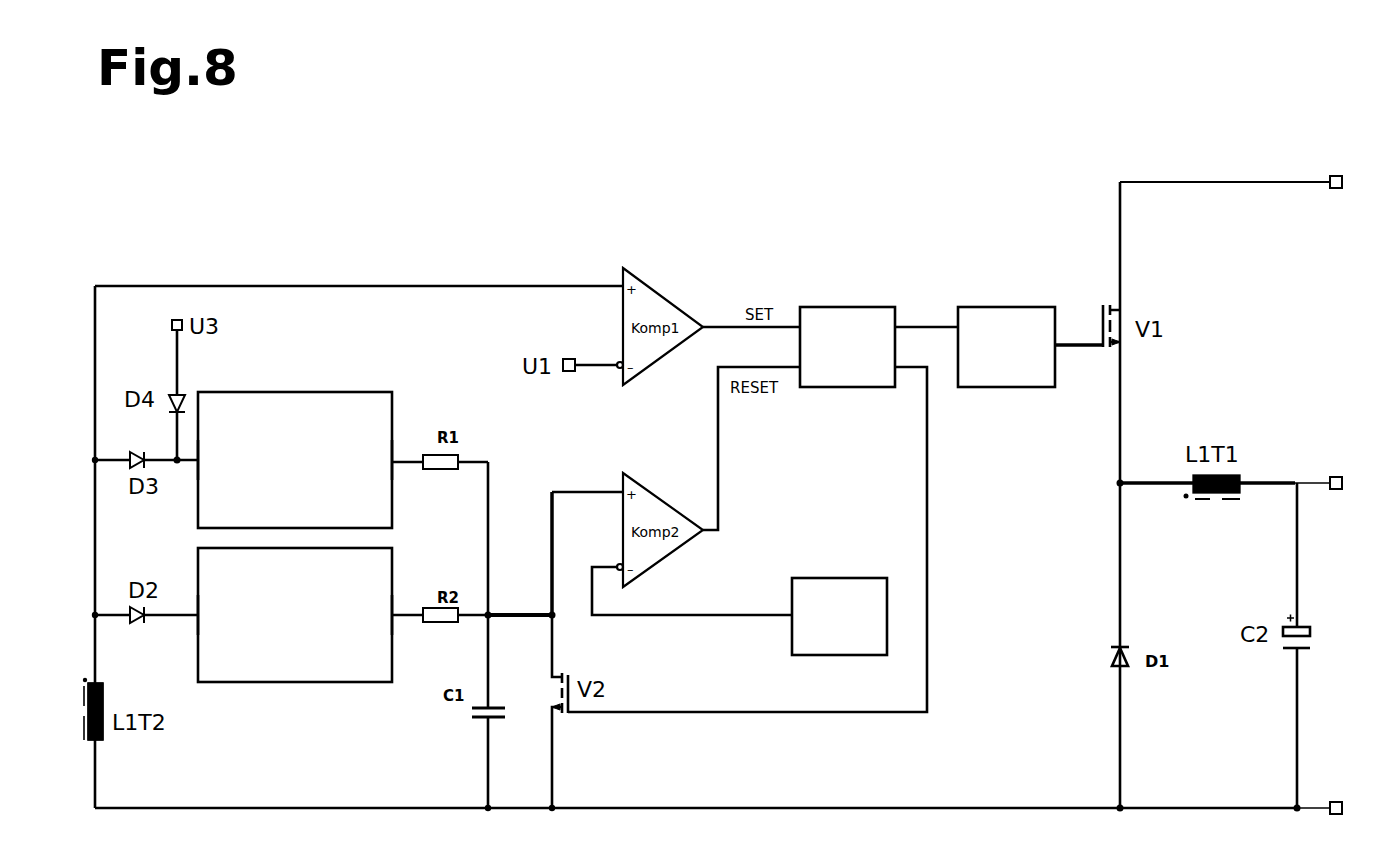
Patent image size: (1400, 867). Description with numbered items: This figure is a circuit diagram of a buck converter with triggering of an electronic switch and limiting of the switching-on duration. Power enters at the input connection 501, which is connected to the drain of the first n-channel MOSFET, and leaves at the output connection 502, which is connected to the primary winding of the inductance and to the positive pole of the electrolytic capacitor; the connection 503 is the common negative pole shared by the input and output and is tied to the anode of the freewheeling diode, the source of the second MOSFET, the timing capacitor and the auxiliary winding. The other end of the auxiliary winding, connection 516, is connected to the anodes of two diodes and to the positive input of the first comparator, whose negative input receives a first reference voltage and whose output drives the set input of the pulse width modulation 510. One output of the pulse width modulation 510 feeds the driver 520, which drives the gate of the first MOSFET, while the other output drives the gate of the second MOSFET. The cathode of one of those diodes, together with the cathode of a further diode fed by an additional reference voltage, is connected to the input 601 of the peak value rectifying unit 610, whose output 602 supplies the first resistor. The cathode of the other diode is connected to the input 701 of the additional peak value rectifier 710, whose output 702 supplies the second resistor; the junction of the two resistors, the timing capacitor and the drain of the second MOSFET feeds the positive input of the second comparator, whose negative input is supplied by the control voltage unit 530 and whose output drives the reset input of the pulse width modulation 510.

The input connection 501 is at (1363, 194).
The output connection 502 is at (1363, 476).
The common negative pole connection 503 is at (1363, 801).
The pulse width modulation 510 is at (847, 347).
The driver 520 is at (1006, 347).
The control voltage unit 530 is at (839, 616).
The input of peak value rectifier 601 is at (222, 460).
The output of peak value rectifier 602 is at (367, 460).
The peak value rectifying unit 610 is at (295, 460).
The input of additional peak value rectifier 701 is at (222, 615).
The output of additional peak value rectifier 702 is at (367, 615).
The additional peak value rectifier 710 is at (295, 615).
The connection of auxiliary winding 516 is at (71, 692).